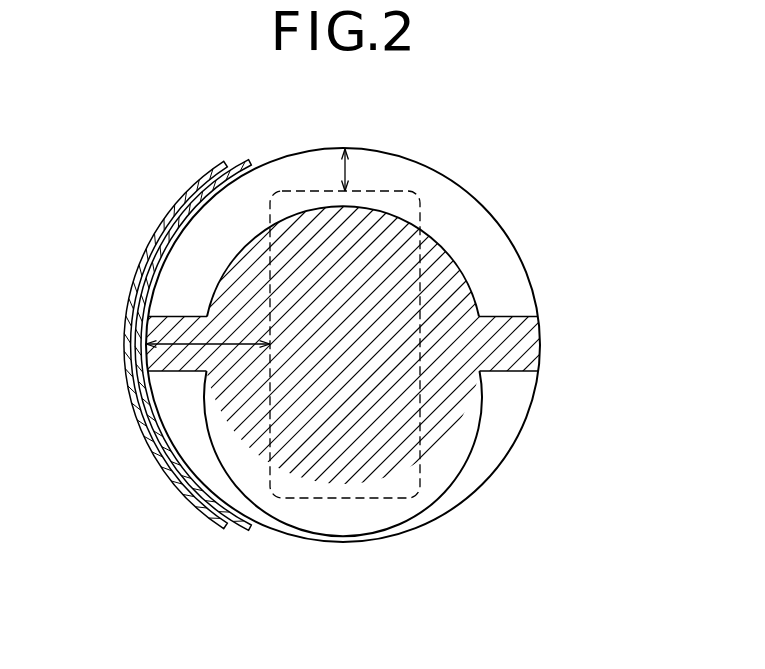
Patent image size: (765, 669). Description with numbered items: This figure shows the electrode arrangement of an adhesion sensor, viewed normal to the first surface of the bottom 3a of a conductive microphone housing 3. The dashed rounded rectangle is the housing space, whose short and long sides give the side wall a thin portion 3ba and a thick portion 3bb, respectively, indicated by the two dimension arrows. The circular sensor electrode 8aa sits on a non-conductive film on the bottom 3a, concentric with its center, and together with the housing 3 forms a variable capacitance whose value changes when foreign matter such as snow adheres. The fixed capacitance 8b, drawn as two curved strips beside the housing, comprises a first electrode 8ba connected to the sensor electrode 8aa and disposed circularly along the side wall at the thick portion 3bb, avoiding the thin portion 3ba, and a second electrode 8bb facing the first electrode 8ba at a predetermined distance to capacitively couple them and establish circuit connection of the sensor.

The microphone housing 3 is at (535, 282).
The bottom 3a is at (473, 238).
The thin portion 3ba is at (353, 167).
The thick portion 3bb is at (202, 342).
The sensor electrode 8aa is at (428, 242).
The fixed capacitance 8b is at (197, 390).
The first electrode 8ba is at (202, 490).
The second electrode 8bb is at (160, 455).